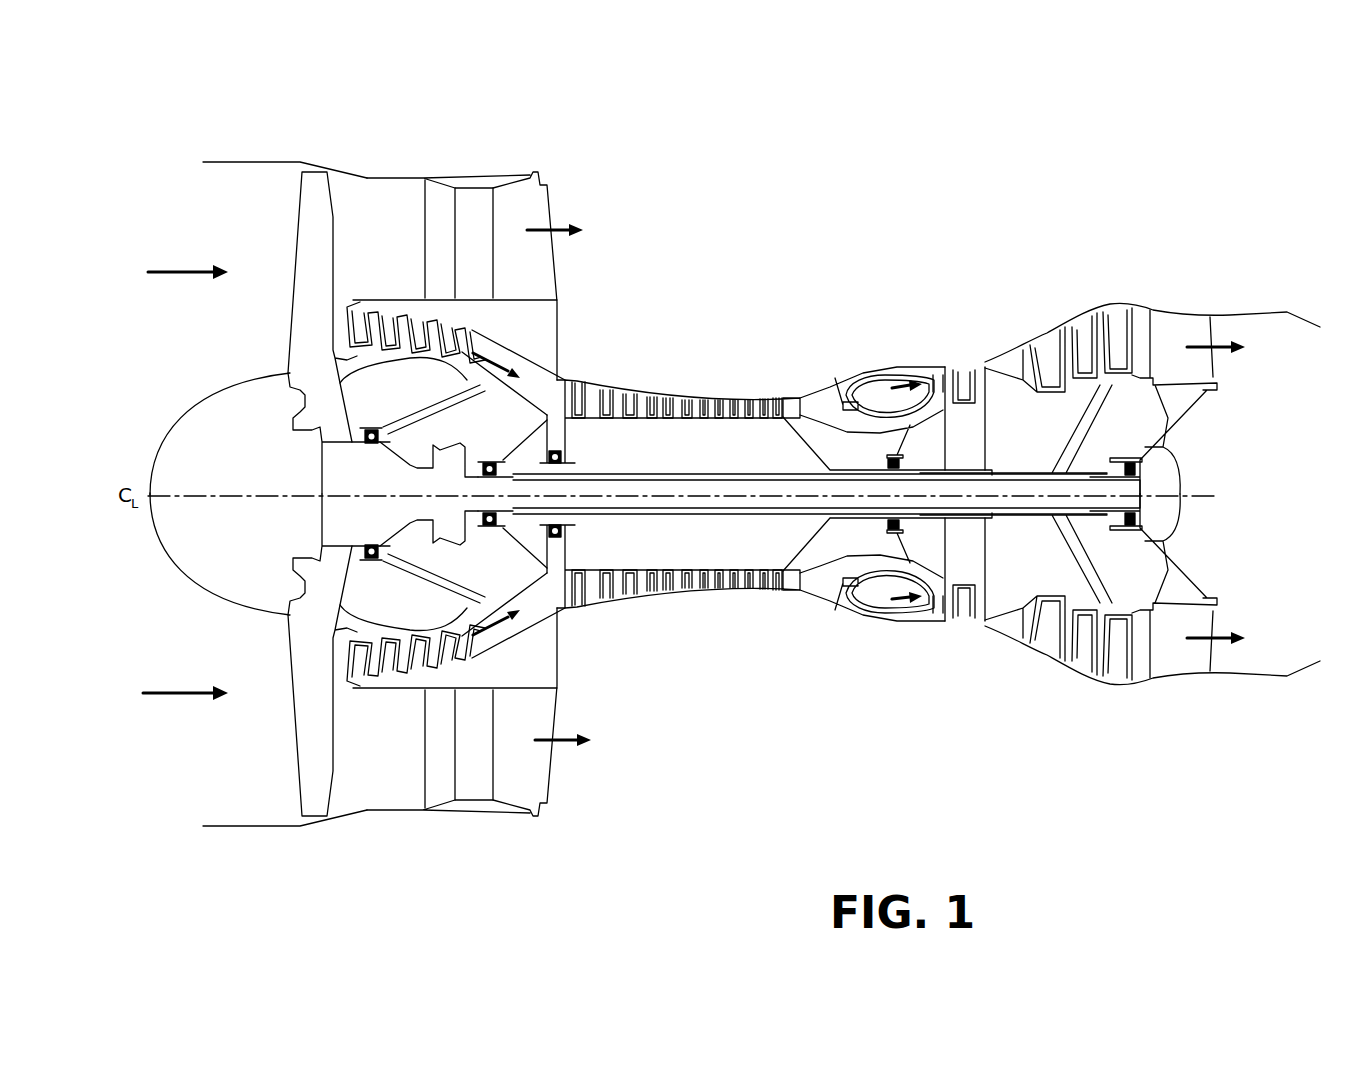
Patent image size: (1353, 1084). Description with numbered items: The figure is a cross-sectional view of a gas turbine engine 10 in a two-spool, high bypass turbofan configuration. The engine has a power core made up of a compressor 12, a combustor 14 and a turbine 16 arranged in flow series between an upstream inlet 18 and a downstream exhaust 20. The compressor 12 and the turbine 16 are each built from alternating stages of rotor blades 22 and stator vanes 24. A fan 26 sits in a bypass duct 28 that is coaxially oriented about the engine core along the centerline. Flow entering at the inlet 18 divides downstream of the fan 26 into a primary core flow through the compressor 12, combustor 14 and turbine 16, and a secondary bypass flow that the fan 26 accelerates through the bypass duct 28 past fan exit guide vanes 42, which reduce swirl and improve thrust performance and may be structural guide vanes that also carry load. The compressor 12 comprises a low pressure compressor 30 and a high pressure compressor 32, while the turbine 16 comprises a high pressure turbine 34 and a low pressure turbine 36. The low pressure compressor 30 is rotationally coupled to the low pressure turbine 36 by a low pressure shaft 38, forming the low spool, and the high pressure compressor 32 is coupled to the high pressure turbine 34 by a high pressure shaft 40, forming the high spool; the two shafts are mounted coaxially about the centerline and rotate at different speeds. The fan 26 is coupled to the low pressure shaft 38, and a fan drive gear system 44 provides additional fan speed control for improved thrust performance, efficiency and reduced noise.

The gas turbine engine 10 is at (180, 133).
The compressor 12 is at (806, 846).
The combustor 14 is at (888, 375).
The turbine 16 is at (1150, 756).
The inlet 18 is at (186, 343).
The exhaust 20 is at (1250, 470).
The rotor blades 22 is at (606, 397).
The stator vanes 24 is at (645, 400).
The fan 26 is at (311, 248).
The bypass duct 28 is at (392, 254).
The low pressure compressor 30 is at (538, 654).
The high pressure compressor 32 is at (671, 624).
The high pressure turbine 34 is at (969, 634).
The low pressure turbine 36 is at (1046, 674).
The low pressure shaft 38 is at (722, 504).
The high pressure shaft 40 is at (805, 525).
The fan exit guide vanes 42 is at (372, 182).
The fan drive gear system 44 is at (447, 438).